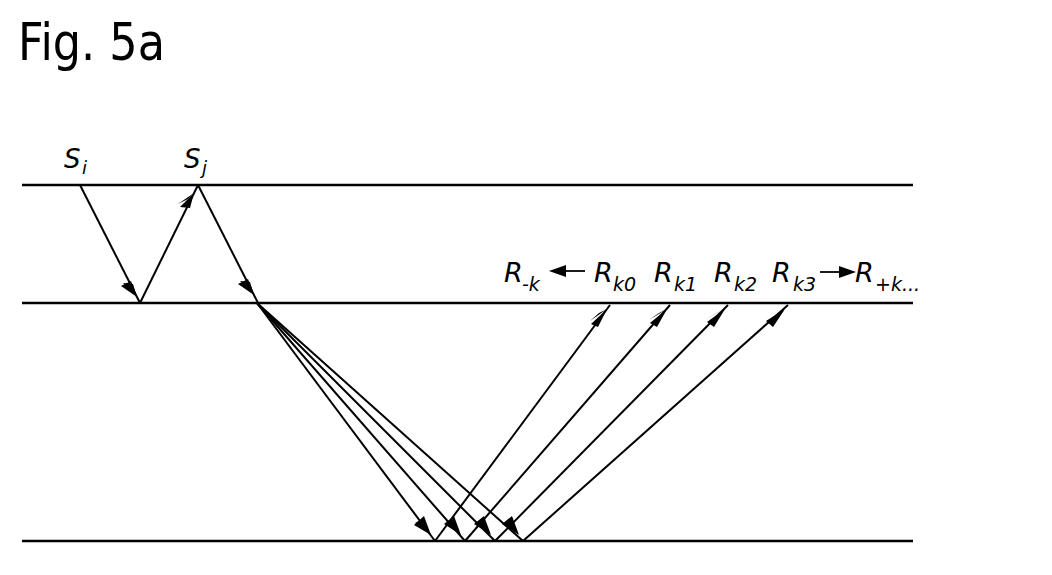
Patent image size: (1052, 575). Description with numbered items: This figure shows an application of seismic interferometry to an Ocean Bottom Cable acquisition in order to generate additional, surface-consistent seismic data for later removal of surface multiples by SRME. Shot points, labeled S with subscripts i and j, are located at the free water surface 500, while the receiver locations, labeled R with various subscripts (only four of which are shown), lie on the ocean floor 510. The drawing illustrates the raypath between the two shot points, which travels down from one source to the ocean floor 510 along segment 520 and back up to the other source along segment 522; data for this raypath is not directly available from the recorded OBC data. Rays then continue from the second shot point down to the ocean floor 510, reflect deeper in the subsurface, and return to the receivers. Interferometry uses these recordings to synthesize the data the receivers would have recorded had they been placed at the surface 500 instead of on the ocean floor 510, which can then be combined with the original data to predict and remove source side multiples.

The free (water) surface 500 is at (288, 185).
The ocean floor 510 is at (325, 303).
The raypath S_iS_j (first segment) 520 is at (105, 237).
The raypath S_iS_j (second segment) 522 is at (172, 238).